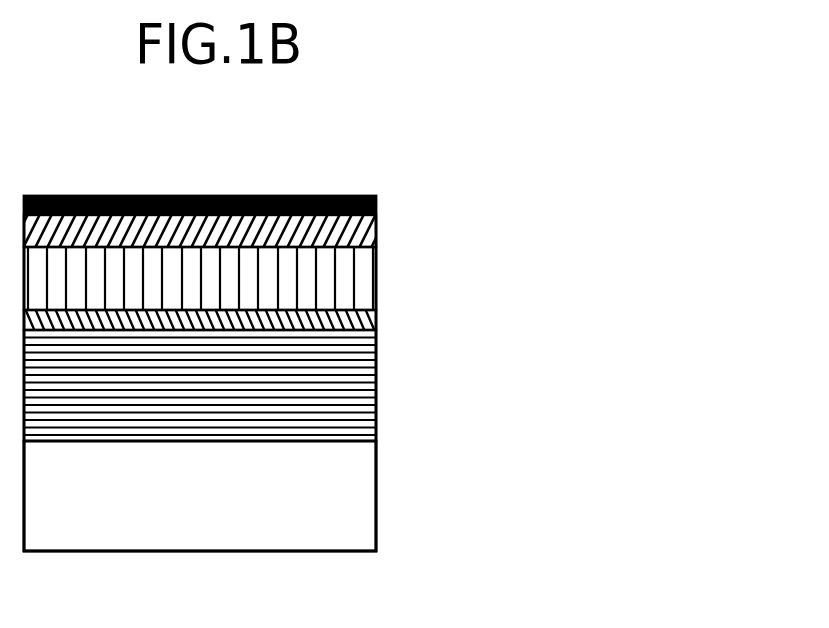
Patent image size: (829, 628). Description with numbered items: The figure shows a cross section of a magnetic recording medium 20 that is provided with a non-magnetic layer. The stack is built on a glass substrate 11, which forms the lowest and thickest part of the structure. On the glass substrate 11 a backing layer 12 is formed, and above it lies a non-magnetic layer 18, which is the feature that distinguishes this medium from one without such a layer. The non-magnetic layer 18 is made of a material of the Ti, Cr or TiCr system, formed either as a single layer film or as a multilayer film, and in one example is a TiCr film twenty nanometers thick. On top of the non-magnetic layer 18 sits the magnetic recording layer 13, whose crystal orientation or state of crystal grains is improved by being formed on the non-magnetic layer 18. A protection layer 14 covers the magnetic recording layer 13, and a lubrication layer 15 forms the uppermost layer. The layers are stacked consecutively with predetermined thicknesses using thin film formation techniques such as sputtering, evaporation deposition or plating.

The magnetic recording medium 20 is at (332, 181).
The lubrication layer 15 is at (377, 199).
The protection layer 14 is at (377, 237).
The magnetic recording layer 13 is at (372, 278).
The non-magnetic layer 18 is at (372, 320).
The backing layer 12 is at (373, 383).
The glass substrate 11 is at (368, 498).